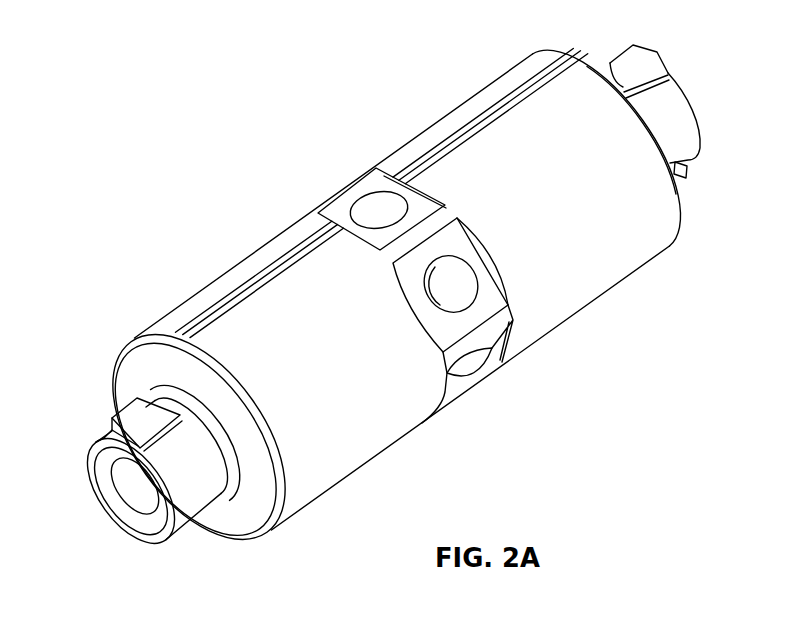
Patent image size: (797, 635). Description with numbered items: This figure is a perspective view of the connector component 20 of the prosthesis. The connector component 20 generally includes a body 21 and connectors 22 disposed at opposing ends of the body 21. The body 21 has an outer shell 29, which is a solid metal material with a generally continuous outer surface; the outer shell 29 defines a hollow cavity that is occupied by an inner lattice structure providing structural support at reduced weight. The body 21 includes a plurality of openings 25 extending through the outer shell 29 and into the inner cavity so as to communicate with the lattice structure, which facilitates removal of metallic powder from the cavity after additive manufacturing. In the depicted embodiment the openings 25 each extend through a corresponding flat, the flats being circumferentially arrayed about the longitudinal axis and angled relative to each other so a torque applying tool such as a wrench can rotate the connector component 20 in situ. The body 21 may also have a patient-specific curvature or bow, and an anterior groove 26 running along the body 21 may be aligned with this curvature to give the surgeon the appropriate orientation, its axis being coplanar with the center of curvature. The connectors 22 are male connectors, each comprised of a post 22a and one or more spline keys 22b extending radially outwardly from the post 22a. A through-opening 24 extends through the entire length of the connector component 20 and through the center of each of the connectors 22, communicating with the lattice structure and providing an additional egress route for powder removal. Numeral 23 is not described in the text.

The connector component 20 is at (236, 57).
The body 21 is at (245, 257).
The connectors 22 is at (93, 429).
The post 22a is at (187, 488).
The spline keys 22b is at (134, 418).
The lower window 23 is at (447, 330).
The through-opening 24 is at (140, 489).
The openings 25 is at (367, 194).
The anterior groove 26 is at (502, 117).
The outer shell 29 is at (565, 312).